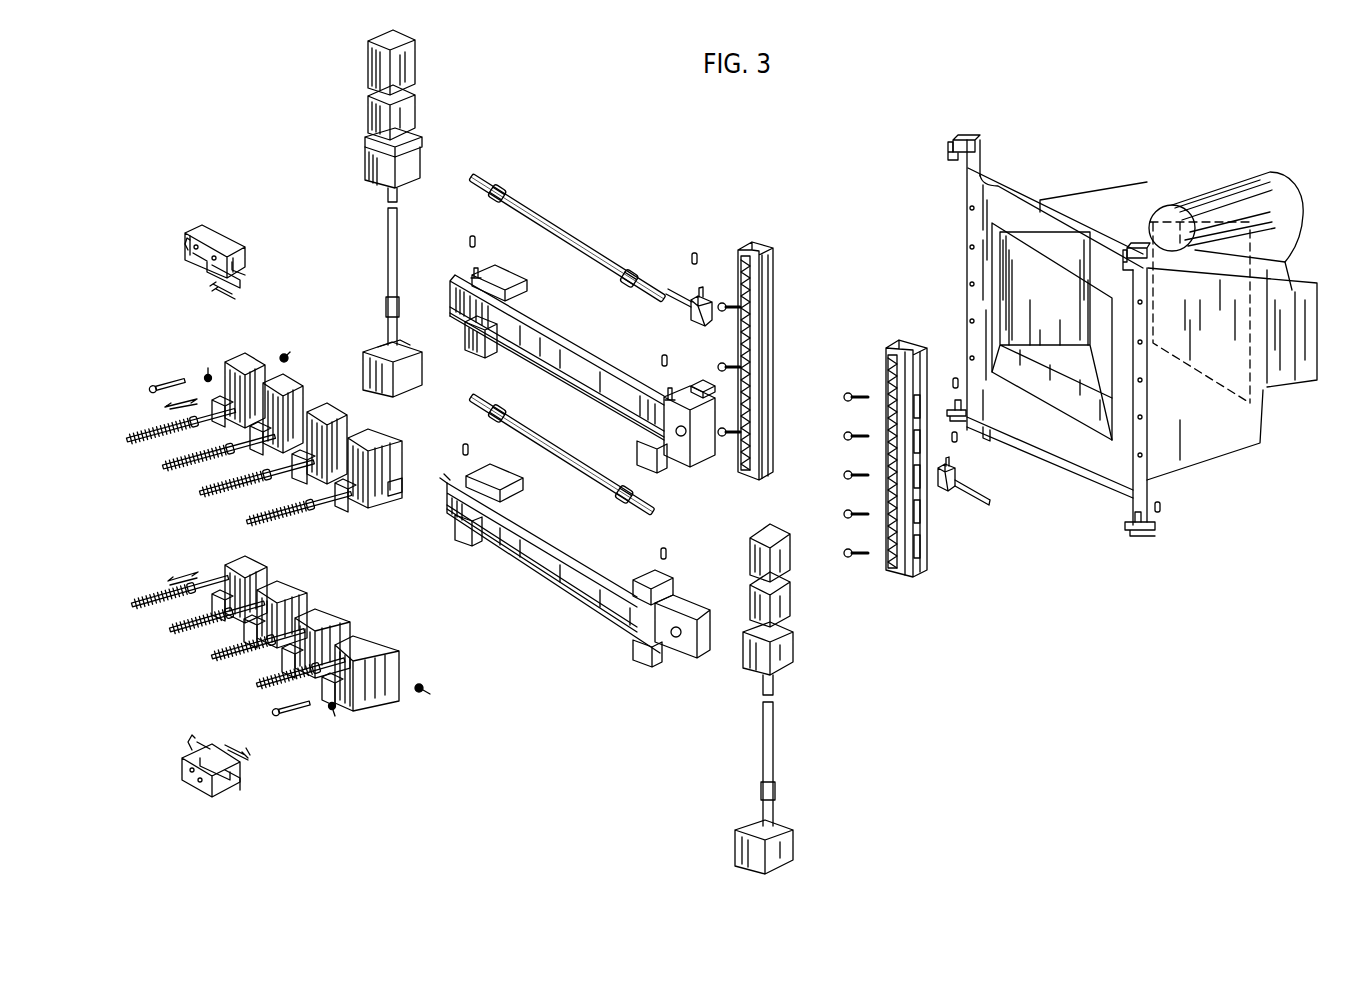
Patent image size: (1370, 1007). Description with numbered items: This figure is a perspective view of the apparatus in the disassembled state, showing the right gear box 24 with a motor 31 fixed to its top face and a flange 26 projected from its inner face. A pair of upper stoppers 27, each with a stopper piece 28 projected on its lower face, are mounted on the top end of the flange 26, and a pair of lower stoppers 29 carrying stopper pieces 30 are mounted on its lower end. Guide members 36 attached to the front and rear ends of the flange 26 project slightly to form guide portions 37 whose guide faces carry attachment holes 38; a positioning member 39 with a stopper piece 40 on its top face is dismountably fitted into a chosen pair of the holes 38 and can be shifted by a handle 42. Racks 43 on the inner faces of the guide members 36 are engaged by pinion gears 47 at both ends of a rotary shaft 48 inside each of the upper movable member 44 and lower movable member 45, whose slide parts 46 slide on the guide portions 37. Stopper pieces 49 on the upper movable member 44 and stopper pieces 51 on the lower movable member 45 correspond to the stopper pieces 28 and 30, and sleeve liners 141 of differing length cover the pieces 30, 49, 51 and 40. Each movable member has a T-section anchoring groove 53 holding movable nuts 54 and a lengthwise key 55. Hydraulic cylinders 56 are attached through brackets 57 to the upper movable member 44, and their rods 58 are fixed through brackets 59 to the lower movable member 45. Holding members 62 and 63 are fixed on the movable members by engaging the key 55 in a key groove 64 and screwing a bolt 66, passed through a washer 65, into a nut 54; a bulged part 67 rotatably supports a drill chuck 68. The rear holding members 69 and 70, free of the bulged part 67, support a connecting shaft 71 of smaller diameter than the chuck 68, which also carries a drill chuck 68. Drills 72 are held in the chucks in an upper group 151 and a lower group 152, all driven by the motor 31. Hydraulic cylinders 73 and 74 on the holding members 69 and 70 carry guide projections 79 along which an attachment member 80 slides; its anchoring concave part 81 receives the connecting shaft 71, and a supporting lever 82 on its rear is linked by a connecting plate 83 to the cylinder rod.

The gear box 24 is at (1075, 198).
The flange 26 is at (1048, 244).
The upper stopper 27 is at (980, 141).
The stopper piece 28 is at (950, 160).
The lower stopper 29 is at (988, 421).
The stopper piece 30 is at (955, 405).
The motor 31 is at (1215, 190).
The guide member 36 is at (898, 340).
The guide portion 37 is at (920, 350).
The attachment hole 38 is at (921, 515).
The positioning member 39 is at (945, 463).
The stopper piece 40 is at (951, 460).
The handle 42 is at (978, 494).
The rack 43 is at (886, 372).
The upper movable member 44 is at (560, 325).
The lower movable member 45 is at (576, 545).
The slide part 46 is at (490, 272).
The pinion gear 47 is at (505, 190).
The rotary shaft 48 is at (572, 244).
The stopper piece 49 is at (472, 272).
The stopper piece 51 is at (460, 476).
The anchoring groove 53 is at (520, 338).
The nut 54 is at (288, 355).
The key 55 is at (560, 372).
The hydraulic cylinder 56 is at (413, 48).
The bracket 57 is at (415, 160).
The rod 58 is at (388, 257).
The bracket 59 is at (398, 392).
The holding member 62 is at (350, 445).
The holding member 63 is at (360, 650).
The key groove 64 is at (396, 480).
The washer 65 is at (207, 368).
The bolt 66 is at (172, 386).
The bulged part 67 is at (325, 482).
The drill chuck 68 is at (222, 430).
The holding member 69 is at (243, 358).
The holding member 70 is at (245, 565).
The connecting shaft 71 is at (228, 415).
The drill 72 is at (210, 468).
The hydraulic cylinder 73 is at (212, 236).
The hydraulic cylinder 74 is at (232, 793).
The guide projection 79 is at (240, 262).
The attachment member 80 is at (240, 292).
The anchoring concave part 81 is at (238, 282).
The supporting lever 82 is at (198, 260).
The connecting plate 83 is at (185, 251).
The sleeve liner 141 is at (955, 380).
The upper group of drills 151 is at (113, 428).
The lower group of drills 152 is at (114, 637).